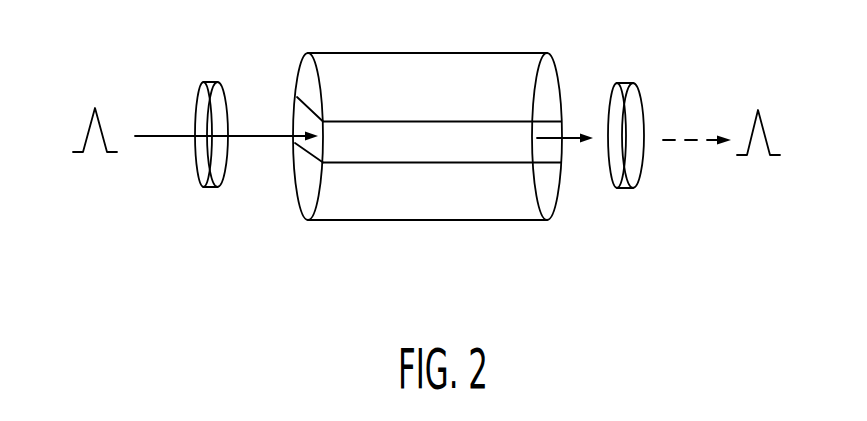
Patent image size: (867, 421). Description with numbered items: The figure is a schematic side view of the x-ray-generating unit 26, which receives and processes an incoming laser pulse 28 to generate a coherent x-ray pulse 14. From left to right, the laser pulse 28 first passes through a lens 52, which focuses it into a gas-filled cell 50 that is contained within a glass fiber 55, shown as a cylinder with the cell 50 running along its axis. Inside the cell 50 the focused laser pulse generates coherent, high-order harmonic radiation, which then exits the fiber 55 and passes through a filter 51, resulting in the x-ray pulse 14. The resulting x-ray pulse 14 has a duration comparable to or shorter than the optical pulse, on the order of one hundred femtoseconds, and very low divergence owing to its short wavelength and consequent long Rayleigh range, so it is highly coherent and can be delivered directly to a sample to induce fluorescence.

The x-ray pulse 14 is at (775, 155).
The x-ray-generating unit 26 is at (214, 311).
The laser pulse 28 is at (110, 153).
The gas-filled cell 50 is at (478, 155).
The filter 51 is at (635, 187).
The lens 52 is at (212, 188).
The glass fiber 55 is at (444, 220).